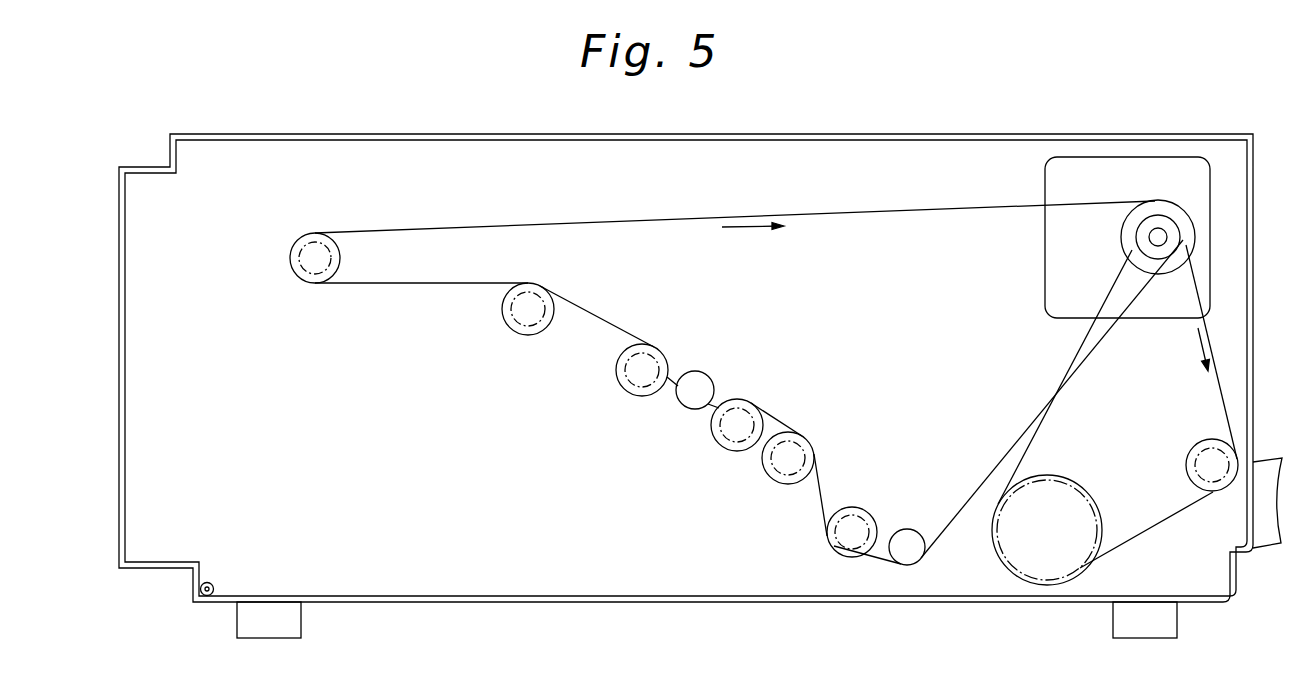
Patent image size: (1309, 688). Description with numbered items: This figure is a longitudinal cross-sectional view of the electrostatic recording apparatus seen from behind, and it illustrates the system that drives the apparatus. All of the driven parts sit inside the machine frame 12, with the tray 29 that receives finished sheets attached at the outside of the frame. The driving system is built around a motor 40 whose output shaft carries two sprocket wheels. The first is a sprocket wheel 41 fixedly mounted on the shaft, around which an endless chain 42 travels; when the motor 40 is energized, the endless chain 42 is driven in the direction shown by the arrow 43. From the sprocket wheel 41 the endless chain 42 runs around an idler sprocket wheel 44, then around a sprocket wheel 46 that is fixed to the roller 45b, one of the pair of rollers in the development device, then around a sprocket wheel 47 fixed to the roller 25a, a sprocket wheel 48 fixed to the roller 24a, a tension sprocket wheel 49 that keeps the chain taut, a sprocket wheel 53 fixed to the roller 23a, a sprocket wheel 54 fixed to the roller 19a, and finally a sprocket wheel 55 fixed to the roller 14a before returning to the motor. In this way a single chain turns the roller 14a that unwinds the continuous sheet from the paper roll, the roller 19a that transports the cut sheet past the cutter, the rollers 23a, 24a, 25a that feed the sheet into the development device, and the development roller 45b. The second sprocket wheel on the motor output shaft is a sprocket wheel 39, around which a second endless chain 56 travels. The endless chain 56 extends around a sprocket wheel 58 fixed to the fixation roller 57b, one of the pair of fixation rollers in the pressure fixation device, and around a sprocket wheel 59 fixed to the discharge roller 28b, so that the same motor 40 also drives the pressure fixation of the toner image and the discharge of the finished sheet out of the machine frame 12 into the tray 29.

The machine frame 12 is at (603, 602).
The roller 14a is at (307, 272).
The roller 19a is at (519, 322).
The roller 23a is at (632, 384).
The roller 24a is at (727, 439).
The roller 25a is at (778, 472).
The discharge roller 28b is at (1213, 470).
The tray 29 is at (1270, 468).
The sprocket wheel 39 is at (1149, 236).
The motor 40 is at (1058, 188).
The sprocket wheel 41 is at (1167, 206).
The endless chain 42 is at (876, 216).
The arrow 43 is at (745, 231).
The idler sprocket wheel 44 is at (908, 543).
The roller 45b is at (842, 545).
The sprocket wheel 46 is at (855, 508).
The sprocket wheel 47 is at (795, 433).
The sprocket wheel 48 is at (742, 400).
The tension sprocket wheel 49 is at (698, 387).
The sprocket wheel 53 is at (646, 345).
The sprocket wheel 54 is at (534, 284).
The sprocket wheel 55 is at (306, 235).
The endless chain 56 is at (1219, 387).
The fixation roller 57b is at (1076, 512).
The sprocket wheel 58 is at (1050, 477).
The sprocket wheel 59 is at (1201, 447).